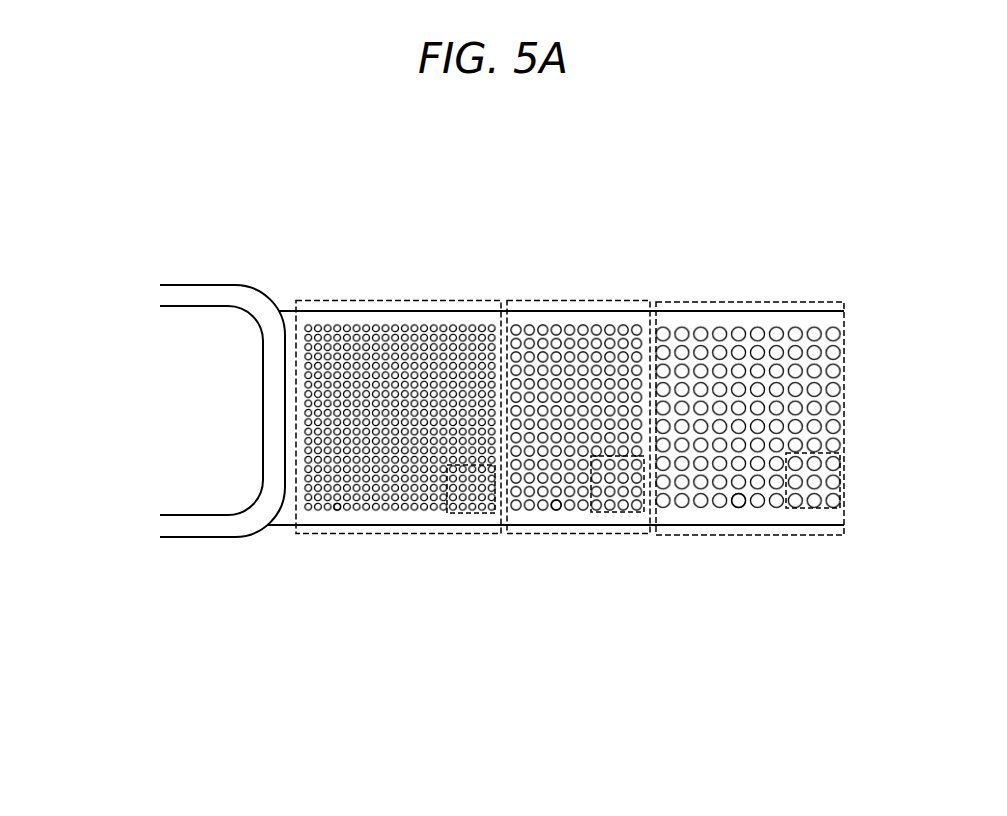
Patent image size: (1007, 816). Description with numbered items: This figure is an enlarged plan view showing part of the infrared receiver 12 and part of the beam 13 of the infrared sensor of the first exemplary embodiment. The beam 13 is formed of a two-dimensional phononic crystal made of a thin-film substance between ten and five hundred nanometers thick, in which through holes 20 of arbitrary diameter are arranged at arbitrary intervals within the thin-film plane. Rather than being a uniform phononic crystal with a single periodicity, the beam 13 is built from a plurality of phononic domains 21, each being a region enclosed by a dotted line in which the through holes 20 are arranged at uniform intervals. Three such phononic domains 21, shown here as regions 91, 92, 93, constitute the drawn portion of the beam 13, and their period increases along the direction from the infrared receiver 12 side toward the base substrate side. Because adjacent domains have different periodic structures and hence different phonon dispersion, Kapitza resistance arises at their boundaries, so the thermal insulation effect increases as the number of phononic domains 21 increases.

The infrared receiver 12 is at (205, 290).
The beam 13 is at (290, 332).
The through holes 20 is at (645, 452).
The phononic domains 21 is at (333, 507).
The first hole region 91 is at (473, 505).
The second hole region 92 is at (628, 503).
The third hole region 93 is at (830, 495).